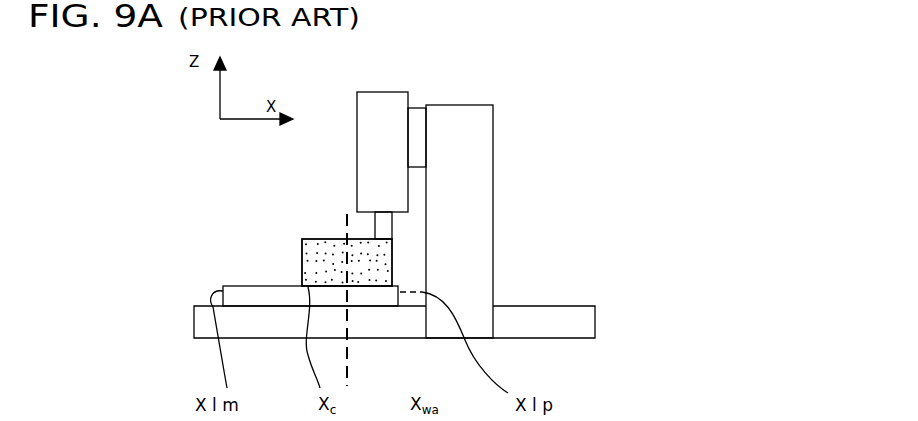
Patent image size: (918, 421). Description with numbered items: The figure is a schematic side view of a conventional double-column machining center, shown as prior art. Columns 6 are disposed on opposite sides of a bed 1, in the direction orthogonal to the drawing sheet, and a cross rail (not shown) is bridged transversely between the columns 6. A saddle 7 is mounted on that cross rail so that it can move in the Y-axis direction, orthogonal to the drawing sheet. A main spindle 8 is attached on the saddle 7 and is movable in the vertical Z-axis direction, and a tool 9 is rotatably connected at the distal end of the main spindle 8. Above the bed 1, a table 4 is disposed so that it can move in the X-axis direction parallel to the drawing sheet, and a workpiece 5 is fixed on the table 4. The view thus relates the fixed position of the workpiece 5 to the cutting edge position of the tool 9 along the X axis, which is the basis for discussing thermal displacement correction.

The bed 1 is at (570, 322).
The table 4 is at (262, 297).
The workpiece 5 is at (335, 247).
The column 6 is at (481, 117).
The saddle 7 is at (417, 107).
The main spindle 8 is at (368, 107).
The tool 9 is at (380, 231).